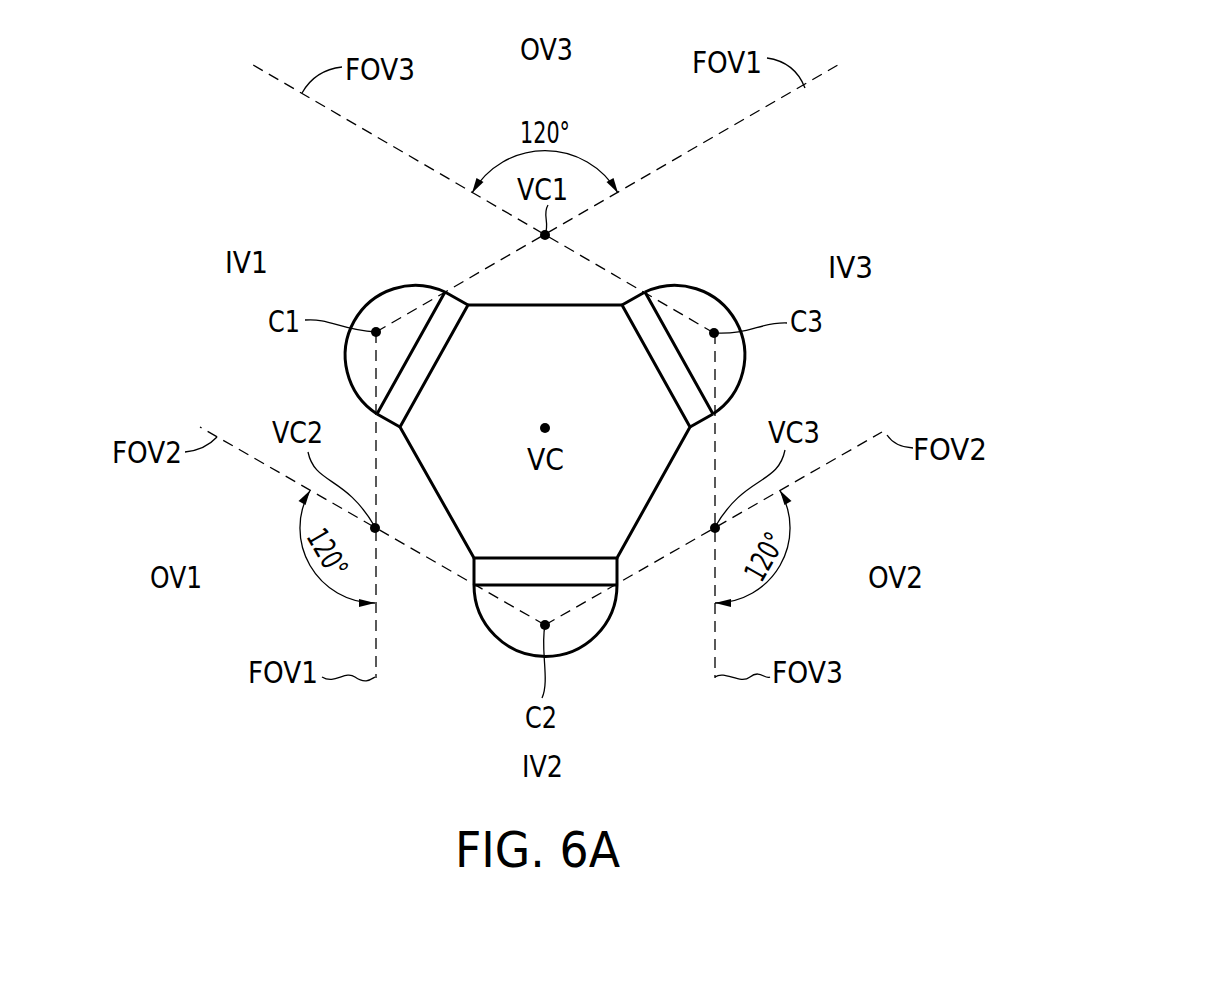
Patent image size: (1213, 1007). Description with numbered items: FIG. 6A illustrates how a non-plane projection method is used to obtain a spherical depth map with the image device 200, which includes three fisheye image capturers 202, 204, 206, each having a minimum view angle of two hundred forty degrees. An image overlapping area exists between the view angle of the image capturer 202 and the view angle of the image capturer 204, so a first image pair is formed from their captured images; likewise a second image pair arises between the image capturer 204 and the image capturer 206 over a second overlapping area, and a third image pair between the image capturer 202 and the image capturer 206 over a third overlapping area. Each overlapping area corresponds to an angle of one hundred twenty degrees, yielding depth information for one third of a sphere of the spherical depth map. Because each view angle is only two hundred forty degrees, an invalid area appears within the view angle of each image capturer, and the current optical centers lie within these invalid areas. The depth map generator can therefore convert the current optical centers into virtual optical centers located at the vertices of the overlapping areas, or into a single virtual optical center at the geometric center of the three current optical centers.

The image device 200 is at (1045, 82).
The image capturer 202 is at (387, 290).
The image capturer 204 is at (592, 640).
The image capturer 206 is at (702, 287).